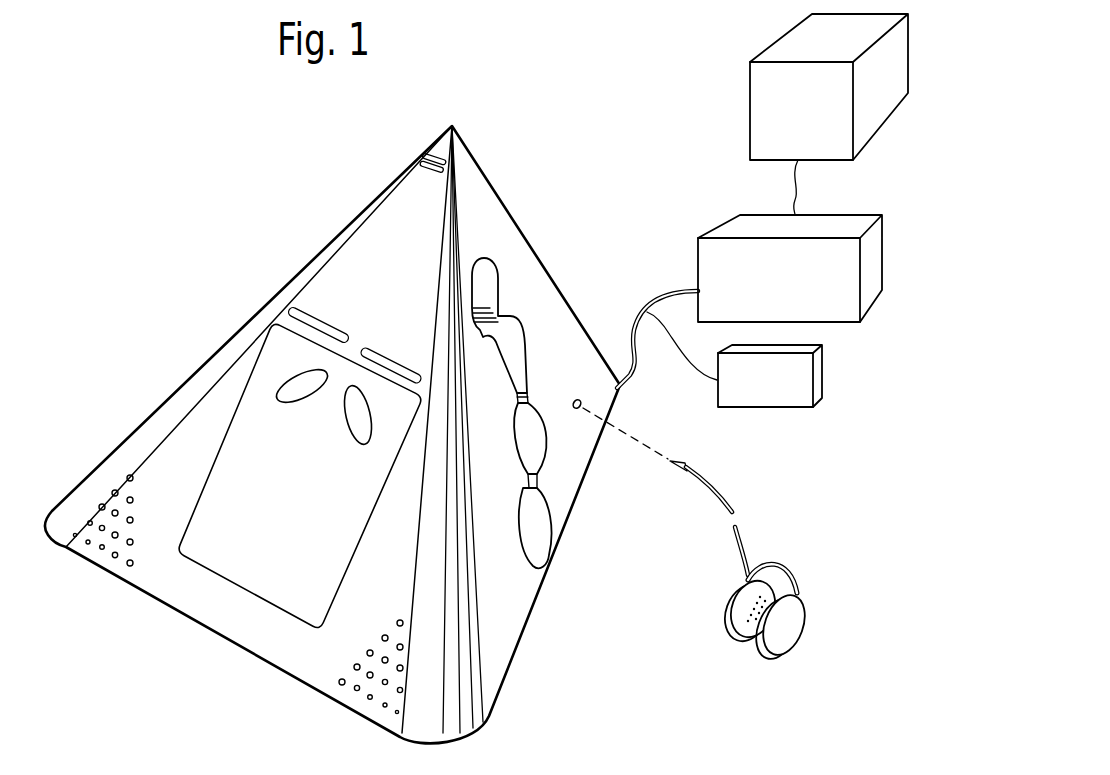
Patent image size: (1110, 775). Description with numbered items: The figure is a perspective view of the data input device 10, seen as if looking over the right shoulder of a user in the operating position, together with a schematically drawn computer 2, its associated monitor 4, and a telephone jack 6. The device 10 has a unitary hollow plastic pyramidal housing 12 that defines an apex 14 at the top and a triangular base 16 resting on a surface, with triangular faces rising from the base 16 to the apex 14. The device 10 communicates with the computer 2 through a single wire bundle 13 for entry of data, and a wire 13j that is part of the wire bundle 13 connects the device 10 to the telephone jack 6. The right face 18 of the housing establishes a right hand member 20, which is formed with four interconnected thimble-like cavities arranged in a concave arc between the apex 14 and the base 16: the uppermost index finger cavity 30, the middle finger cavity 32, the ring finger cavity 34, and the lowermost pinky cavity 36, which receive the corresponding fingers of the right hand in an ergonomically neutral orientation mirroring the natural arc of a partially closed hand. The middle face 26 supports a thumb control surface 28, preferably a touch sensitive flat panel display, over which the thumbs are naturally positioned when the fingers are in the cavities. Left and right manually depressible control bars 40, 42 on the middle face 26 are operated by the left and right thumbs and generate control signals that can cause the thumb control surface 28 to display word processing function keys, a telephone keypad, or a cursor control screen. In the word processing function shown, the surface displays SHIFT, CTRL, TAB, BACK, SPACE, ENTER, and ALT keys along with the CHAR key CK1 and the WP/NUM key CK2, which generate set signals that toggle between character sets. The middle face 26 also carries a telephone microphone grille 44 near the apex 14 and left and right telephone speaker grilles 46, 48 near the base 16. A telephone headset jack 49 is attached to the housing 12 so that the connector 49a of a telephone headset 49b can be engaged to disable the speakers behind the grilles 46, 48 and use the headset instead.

The data input device 10 is at (236, 273).
The housing 12 is at (540, 258).
The apex 14 is at (454, 127).
The base 16 is at (217, 635).
The right face 18 is at (548, 383).
The right hand member 20 is at (552, 493).
The middle face 26 is at (382, 281).
The thumb control surface 28 is at (258, 551).
The index finger cavity 30 is at (493, 272).
The middle finger cavity 32 is at (522, 333).
The ring finger cavity 34 is at (547, 440).
The pinky cavity 36 is at (548, 533).
The left control bar 40 is at (312, 308).
The right control bar 42 is at (363, 347).
The telephone microphone grille 44 is at (434, 147).
The left telephone speaker grille 46 is at (113, 493).
The right telephone speaker grille 48 is at (355, 692).
The telephone headset jack 49 is at (580, 397).
The connector 49a is at (683, 460).
The telephone headset 49b is at (797, 582).
The wire bundle 13 is at (675, 290).
The wire 13j is at (697, 375).
The computer 2 is at (873, 253).
The monitor 4 is at (875, 118).
The telephone jack 6 is at (822, 378).
The CHAR key CK1 is at (347, 397).
The WP/NUM key CK2 is at (275, 392).